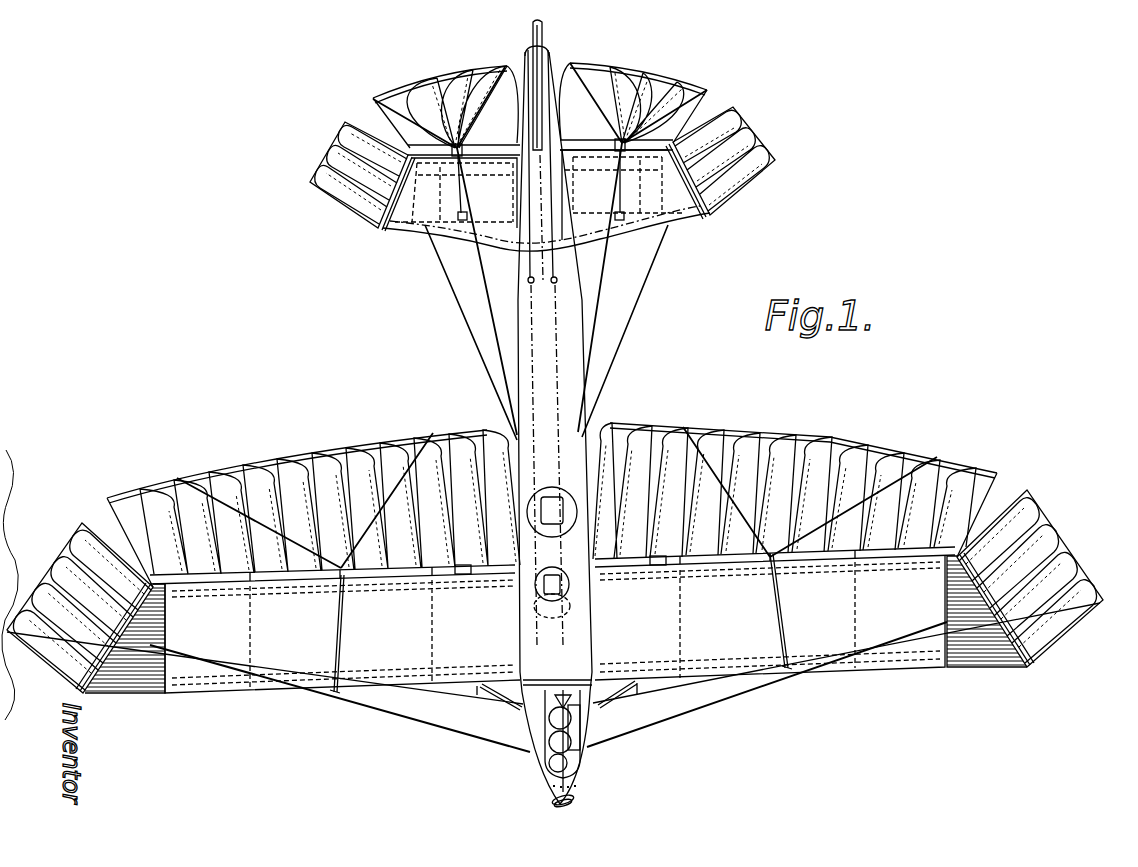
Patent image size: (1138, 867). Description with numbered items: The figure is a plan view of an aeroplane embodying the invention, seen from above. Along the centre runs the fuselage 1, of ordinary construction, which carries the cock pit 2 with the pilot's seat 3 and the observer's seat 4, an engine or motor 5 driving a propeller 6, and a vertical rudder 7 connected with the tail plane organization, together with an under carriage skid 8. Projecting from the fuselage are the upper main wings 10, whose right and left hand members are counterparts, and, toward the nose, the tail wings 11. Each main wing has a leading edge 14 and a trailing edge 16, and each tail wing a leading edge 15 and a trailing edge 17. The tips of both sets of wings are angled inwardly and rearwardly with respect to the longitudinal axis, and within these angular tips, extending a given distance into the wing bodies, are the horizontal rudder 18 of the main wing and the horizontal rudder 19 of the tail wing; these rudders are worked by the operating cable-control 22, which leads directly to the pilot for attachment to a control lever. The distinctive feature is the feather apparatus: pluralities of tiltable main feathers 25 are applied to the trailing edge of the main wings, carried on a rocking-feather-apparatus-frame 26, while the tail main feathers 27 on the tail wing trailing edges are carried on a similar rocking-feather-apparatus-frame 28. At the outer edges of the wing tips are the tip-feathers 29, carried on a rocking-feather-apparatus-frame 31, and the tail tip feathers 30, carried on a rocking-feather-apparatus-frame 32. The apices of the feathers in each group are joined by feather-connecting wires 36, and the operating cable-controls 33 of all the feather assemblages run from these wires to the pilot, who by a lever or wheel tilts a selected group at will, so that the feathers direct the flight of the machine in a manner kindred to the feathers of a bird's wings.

The fuselage 1 is at (530, 340).
The cock pit 2 is at (575, 497).
The pilot's seat 3 is at (552, 592).
The observer's seat 4 is at (552, 510).
The engine or motor 5 is at (572, 752).
The propeller 6 is at (567, 801).
The vertical rudder 7 is at (533, 30).
The under carriage skid 8 is at (510, 706).
The upper main wings 10 is at (555, 624).
The tail wings 11 is at (539, 189).
The leading edge of main wing 14 is at (235, 698).
The leading edge of tail wing 15 is at (640, 240).
The trailing edge of main wing 16 is at (230, 596).
The trailing edge of tail wing 17 is at (437, 165).
The horizontal rudder of main wing 18 is at (150, 680).
The horizontal rudder of tail wing 19 is at (405, 222).
The operating cable-control 22 is at (460, 306).
The main feathers 25 is at (292, 447).
The rocking-feather-apparatus-frame 26 is at (463, 575).
The tail main feathers 27 is at (503, 66).
The rocking-feather-apparatus-frame 28 is at (463, 157).
The tip-feathers 29 is at (56, 556).
The tail tip feathers 30 is at (345, 133).
The rocking-feather-apparatus-frame 31 is at (84, 697).
The rocking-feather-apparatus-frame 32 is at (390, 210).
The operating cable-controls of feathers 33 is at (598, 310).
The feather-connecting wires 36 is at (660, 71).